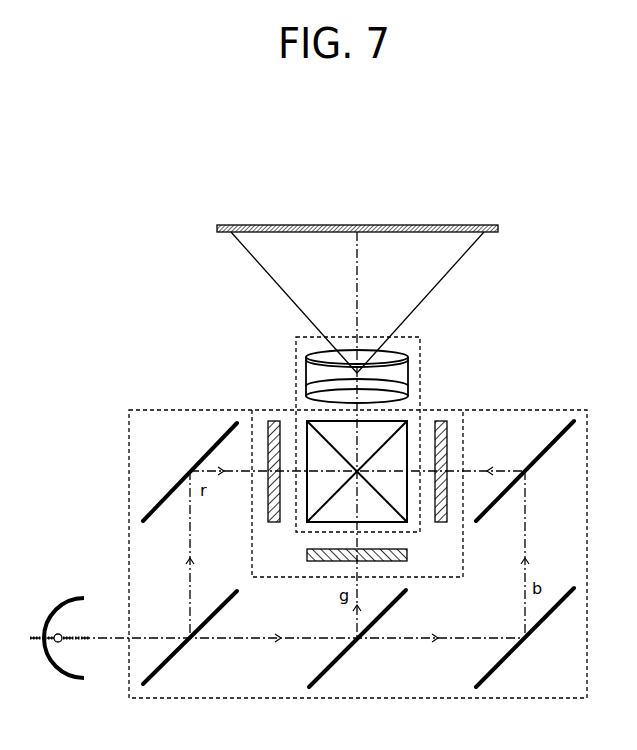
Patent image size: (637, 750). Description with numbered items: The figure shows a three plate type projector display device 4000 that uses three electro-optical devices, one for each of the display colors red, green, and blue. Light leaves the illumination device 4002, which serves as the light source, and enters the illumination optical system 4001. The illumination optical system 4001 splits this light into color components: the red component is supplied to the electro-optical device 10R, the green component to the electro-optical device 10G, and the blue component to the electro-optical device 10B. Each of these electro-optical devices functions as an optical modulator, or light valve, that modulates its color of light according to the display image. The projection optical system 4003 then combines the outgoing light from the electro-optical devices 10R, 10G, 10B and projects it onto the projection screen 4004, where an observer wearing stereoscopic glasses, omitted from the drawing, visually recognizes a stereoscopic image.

The projector display device 4000 is at (150, 362).
The illumination optical system 4001 is at (563, 409).
The illumination device 4002 is at (73, 594).
The projection optical system 4003 is at (420, 358).
The projection screen 4004 is at (400, 233).
The electro-optical device 10R is at (268, 511).
The electro-optical device 10G is at (307, 561).
The electro-optical device 10B is at (447, 459).